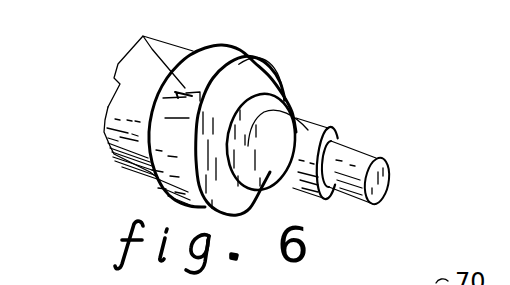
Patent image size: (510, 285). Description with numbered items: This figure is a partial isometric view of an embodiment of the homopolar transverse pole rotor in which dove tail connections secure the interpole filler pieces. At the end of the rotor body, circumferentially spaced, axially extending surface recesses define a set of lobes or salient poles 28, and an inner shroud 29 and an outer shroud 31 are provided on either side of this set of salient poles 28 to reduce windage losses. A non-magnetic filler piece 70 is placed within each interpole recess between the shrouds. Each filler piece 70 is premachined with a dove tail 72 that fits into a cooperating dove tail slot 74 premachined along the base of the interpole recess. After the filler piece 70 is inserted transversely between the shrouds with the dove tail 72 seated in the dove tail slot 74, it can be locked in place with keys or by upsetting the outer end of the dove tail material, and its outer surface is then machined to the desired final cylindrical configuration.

The non-magnetic filler piece 70 is at (243, 53).
The dove tail 72 is at (152, 48).
The dove tail slot 74 is at (150, 98).
The inner shroud 29 is at (180, 63).
The salient pole 28 is at (180, 106).
The outer shroud 31 is at (272, 85).